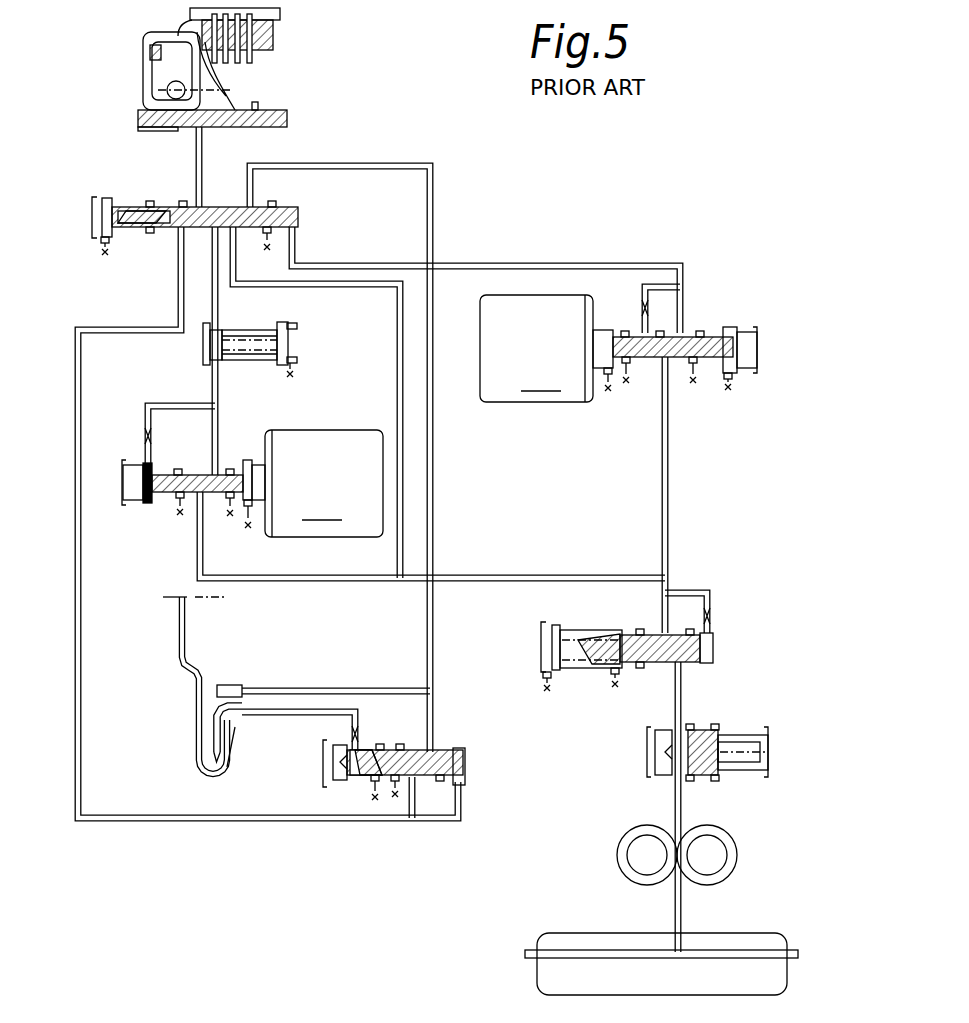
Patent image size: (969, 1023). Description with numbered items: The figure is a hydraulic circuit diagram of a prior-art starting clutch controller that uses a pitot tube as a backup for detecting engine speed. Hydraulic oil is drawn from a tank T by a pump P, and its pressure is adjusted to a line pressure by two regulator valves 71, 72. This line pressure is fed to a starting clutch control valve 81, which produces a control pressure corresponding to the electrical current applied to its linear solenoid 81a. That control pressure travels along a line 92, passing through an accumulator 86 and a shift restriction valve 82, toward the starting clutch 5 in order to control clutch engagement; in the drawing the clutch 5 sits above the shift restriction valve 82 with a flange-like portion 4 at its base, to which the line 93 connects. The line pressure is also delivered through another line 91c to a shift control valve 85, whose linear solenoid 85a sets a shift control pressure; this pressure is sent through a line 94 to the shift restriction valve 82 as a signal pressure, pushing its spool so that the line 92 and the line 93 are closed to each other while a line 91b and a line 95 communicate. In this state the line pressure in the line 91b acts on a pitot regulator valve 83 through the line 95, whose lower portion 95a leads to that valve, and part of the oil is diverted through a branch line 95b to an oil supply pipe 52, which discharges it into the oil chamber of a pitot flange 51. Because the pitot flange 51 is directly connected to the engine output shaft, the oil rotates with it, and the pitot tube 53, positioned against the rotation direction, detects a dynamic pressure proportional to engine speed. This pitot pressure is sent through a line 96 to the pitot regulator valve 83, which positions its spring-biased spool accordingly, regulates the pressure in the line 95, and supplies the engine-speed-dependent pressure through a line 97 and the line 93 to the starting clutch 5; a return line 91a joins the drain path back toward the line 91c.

The starting clutch 5 is at (290, 17).
The flange 4 is at (170, 117).
The shift restriction valve 82 is at (120, 172).
The line 93 is at (203, 143).
The line 95 is at (352, 160).
The pipe branch 95a is at (434, 693).
The line 95b is at (338, 688).
The line 94 is at (570, 263).
The line 92 is at (208, 293).
The line 97 is at (75, 458).
The return line 91a is at (198, 563).
The line 91b is at (401, 402).
The line 91c is at (667, 468).
The line 96 is at (262, 713).
The accumulator 86 is at (309, 336).
The starting clutch control valve 81 is at (239, 443).
The linear solenoid 81a is at (324, 483).
The shift control valve 85 is at (745, 316).
The linear solenoid 85a is at (536, 348).
The regulator valve 72 is at (725, 627).
The regulator valve 71 is at (775, 716).
The pitot regulator valve 83 is at (485, 767).
The pitot flange 51 is at (180, 640).
The oil supply pipe 52 is at (228, 684).
The pitot tube 53 is at (238, 717).
The pump P is at (735, 840).
The tank T is at (785, 982).